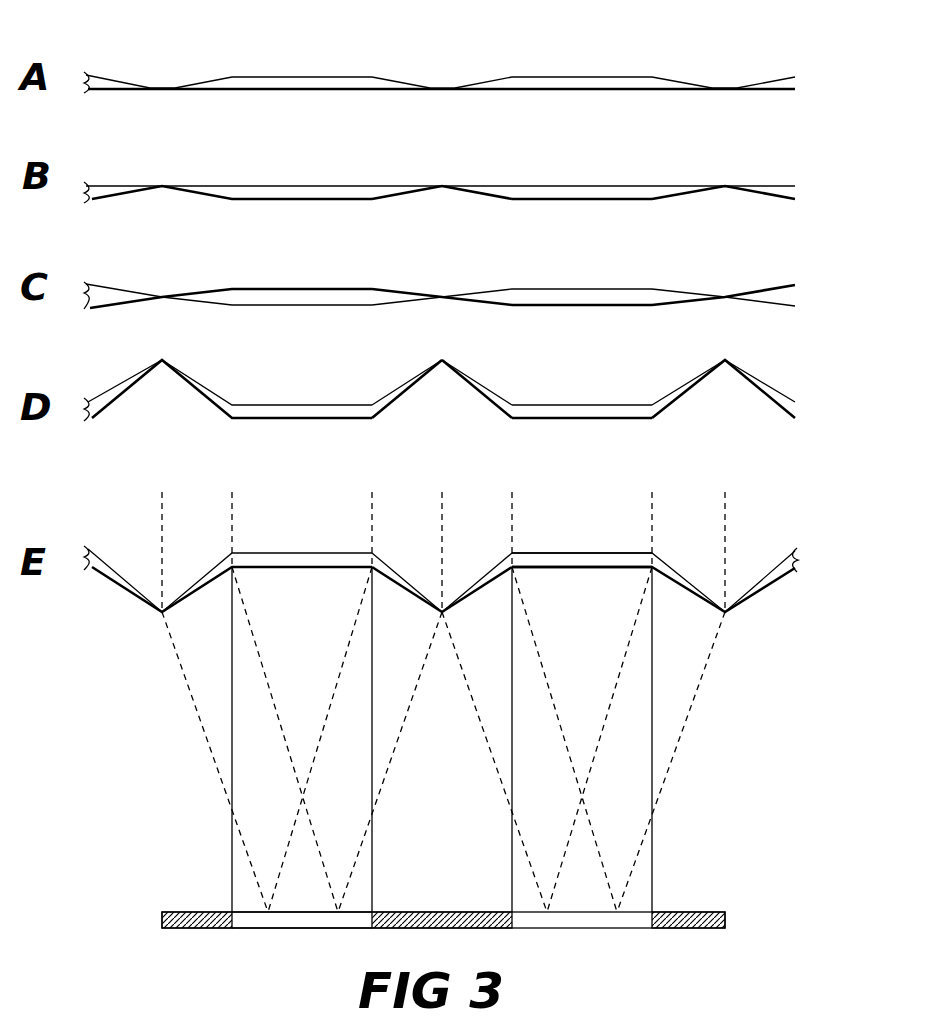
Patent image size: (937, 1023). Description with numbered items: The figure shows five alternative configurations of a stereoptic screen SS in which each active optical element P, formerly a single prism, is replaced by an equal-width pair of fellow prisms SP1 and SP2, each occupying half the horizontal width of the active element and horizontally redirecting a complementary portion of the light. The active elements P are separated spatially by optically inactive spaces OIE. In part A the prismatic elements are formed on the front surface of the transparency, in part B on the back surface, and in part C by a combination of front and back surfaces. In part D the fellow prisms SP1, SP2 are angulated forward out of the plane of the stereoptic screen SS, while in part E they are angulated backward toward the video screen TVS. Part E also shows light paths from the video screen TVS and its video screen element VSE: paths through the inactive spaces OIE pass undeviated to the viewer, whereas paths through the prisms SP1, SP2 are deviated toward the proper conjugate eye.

In FIG. 3A, the active optical element P is at (795, 36).
In FIG. 3A, the optically inactive space OIE is at (292, 96).
In FIG. 3B, the optically inactive space OIE is at (587, 208).
In FIG. 3C, the optically inactive space OIE is at (587, 278).
In FIG. 3D, the optically inactive space OIE is at (589, 430).
In FIG. 3E, the optically inactive space OIE is at (589, 542).
In FIG. 3A, the first fellow prism SP1 is at (400, 180).
In FIG. 3B, the first fellow prism SP1 is at (372, 180).
In FIG. 3C, the first fellow prism SP1 is at (398, 312).
In FIG. 3D, the first fellow prism SP1 is at (393, 378).
In FIG. 3E, the first fellow prism SP1 is at (412, 575).
In FIG. 3A, the second fellow prism SP2 is at (483, 180).
In FIG. 3B, the second fellow prism SP2 is at (483, 180).
In FIG. 3C, the second fellow prism SP2 is at (488, 312).
In FIG. 3D, the second fellow prism SP2 is at (497, 378).
In FIG. 3E, the second fellow prism SP2 is at (475, 575).
In FIG. 3E, the stereoptic screen SS is at (458, 580).
In FIG. 3E, the video screen TVS is at (740, 917).
In FIG. 3E, the video screen element VSE is at (302, 944).